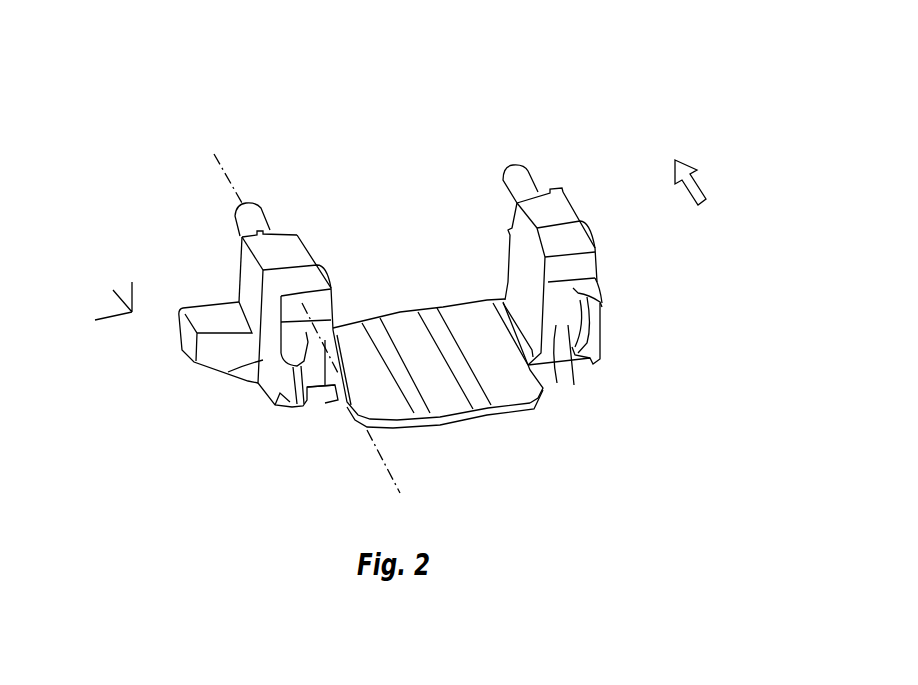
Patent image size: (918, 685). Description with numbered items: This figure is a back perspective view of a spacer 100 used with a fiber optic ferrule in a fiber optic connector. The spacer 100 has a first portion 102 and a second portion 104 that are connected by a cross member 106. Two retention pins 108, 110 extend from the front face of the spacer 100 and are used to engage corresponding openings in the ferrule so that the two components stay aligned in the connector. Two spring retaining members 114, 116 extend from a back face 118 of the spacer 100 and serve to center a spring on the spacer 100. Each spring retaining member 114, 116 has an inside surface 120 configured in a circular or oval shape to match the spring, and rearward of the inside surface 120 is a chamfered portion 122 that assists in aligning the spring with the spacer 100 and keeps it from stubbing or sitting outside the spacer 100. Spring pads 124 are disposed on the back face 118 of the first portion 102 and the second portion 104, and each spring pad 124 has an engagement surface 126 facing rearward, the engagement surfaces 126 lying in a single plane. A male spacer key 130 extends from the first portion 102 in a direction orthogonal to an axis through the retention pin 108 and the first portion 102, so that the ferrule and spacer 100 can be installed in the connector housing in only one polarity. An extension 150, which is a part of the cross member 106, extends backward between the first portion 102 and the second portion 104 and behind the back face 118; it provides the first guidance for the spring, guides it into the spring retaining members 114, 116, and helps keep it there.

The spacer 100 is at (416, 257).
The first portion 102 is at (258, 398).
The second portion 104 is at (593, 237).
The cross member 106 is at (325, 398).
The retention pin 108 is at (267, 220).
The retention pin 110 is at (498, 176).
The spring retaining member 114 is at (228, 372).
The spring retaining member 116 is at (603, 297).
The back face 118 is at (323, 297).
The inside surface 120 is at (575, 363).
The chamfered portion 122 is at (291, 380).
The spring pad 124 is at (555, 330).
The engagement surface 126 is at (330, 327).
The male spacer key 130 is at (180, 337).
The extension 150 is at (495, 413).